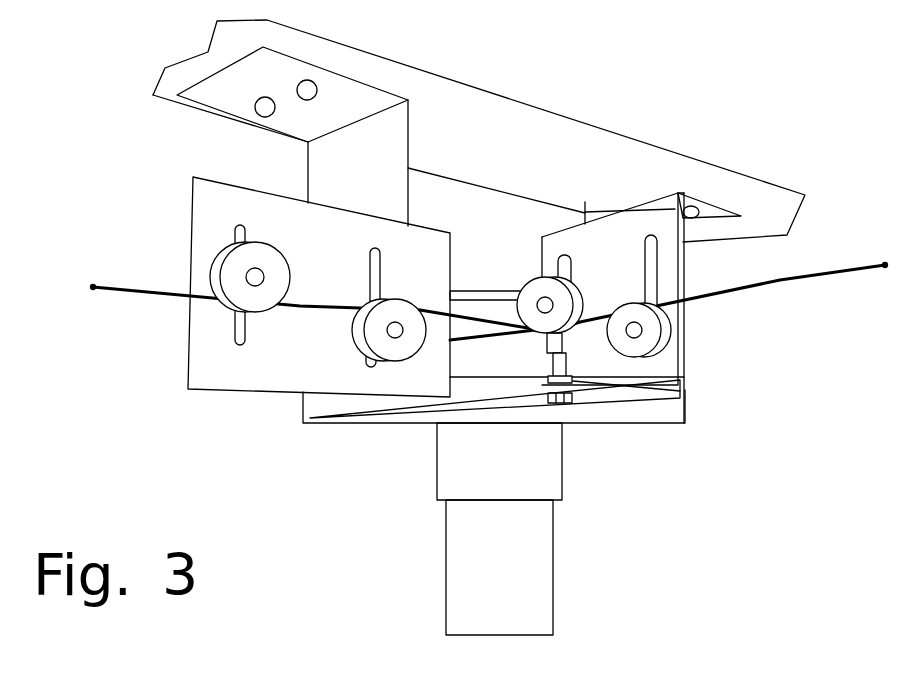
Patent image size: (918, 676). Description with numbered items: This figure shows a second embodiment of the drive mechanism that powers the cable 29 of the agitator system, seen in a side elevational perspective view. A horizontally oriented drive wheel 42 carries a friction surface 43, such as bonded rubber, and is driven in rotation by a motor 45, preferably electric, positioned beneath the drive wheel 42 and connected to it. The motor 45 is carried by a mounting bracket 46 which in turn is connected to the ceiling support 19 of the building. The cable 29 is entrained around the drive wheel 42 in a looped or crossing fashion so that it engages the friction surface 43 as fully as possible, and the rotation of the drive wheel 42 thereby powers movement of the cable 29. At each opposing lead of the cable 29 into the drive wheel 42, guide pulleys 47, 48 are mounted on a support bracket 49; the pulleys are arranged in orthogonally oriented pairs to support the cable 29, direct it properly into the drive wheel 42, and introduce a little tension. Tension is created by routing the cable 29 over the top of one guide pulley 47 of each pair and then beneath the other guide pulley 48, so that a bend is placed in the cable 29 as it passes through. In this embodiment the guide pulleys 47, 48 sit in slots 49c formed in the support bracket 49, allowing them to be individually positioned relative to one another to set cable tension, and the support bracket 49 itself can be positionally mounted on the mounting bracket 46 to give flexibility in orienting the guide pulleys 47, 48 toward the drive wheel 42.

The ceiling support 19 is at (757, 177).
The cable 29 is at (100, 290).
The drive wheel 42 is at (500, 290).
The friction surface 43 is at (467, 363).
The motor 45 is at (554, 527).
The mounting bracket 46 is at (686, 415).
The guide pulley 47 is at (533, 282).
The guide pulley 48 is at (363, 355).
The support bracket 49 is at (193, 227).
The slots 49c is at (370, 250).